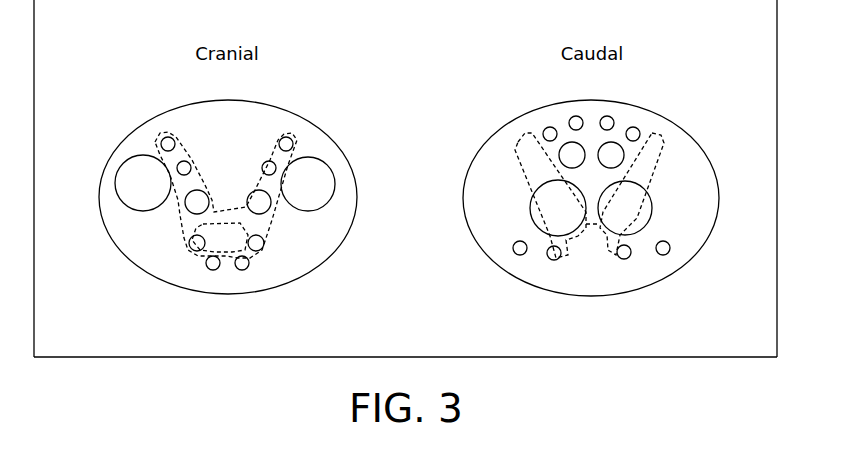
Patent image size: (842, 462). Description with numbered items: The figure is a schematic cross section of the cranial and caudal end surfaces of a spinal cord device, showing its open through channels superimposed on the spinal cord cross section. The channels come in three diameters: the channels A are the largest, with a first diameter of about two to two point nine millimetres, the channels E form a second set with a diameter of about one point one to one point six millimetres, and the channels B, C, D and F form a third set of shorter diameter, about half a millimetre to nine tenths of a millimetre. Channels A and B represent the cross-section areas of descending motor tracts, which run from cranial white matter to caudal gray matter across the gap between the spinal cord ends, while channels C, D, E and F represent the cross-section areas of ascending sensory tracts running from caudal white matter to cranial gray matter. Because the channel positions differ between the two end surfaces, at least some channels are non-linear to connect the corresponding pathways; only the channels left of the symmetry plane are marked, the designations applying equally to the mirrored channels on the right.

The channel A is at (350, 195).
The channel B is at (383, 258).
The channel C is at (359, 139).
The channel D is at (380, 145).
The channel E is at (385, 178).
The channel F is at (358, 245).